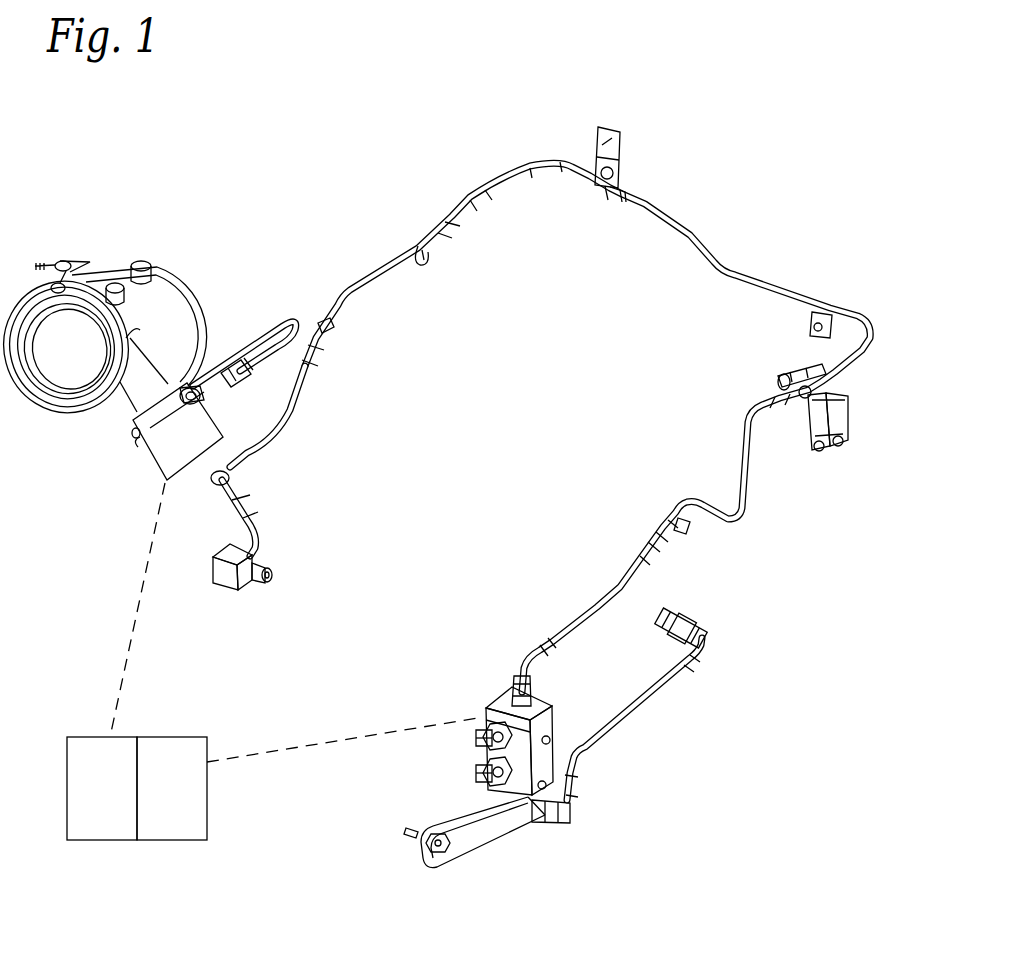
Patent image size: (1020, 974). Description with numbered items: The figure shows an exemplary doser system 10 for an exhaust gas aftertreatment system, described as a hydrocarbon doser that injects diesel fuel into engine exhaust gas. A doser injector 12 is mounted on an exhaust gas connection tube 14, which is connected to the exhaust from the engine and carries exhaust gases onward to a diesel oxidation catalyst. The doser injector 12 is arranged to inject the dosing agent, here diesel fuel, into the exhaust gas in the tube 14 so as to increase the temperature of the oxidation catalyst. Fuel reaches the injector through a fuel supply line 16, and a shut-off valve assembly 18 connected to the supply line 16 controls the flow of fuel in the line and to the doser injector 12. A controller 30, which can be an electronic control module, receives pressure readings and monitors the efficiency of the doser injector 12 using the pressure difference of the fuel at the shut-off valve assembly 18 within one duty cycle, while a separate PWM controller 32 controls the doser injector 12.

The doser system 10 is at (688, 872).
The doser injector 12 is at (136, 481).
The exhaust gas connection tube 14 is at (109, 246).
The fuel supply line 16 is at (687, 233).
The shut-off valve assembly 18 is at (481, 678).
The controller 30 is at (172, 842).
The PWM controller 32 is at (110, 840).